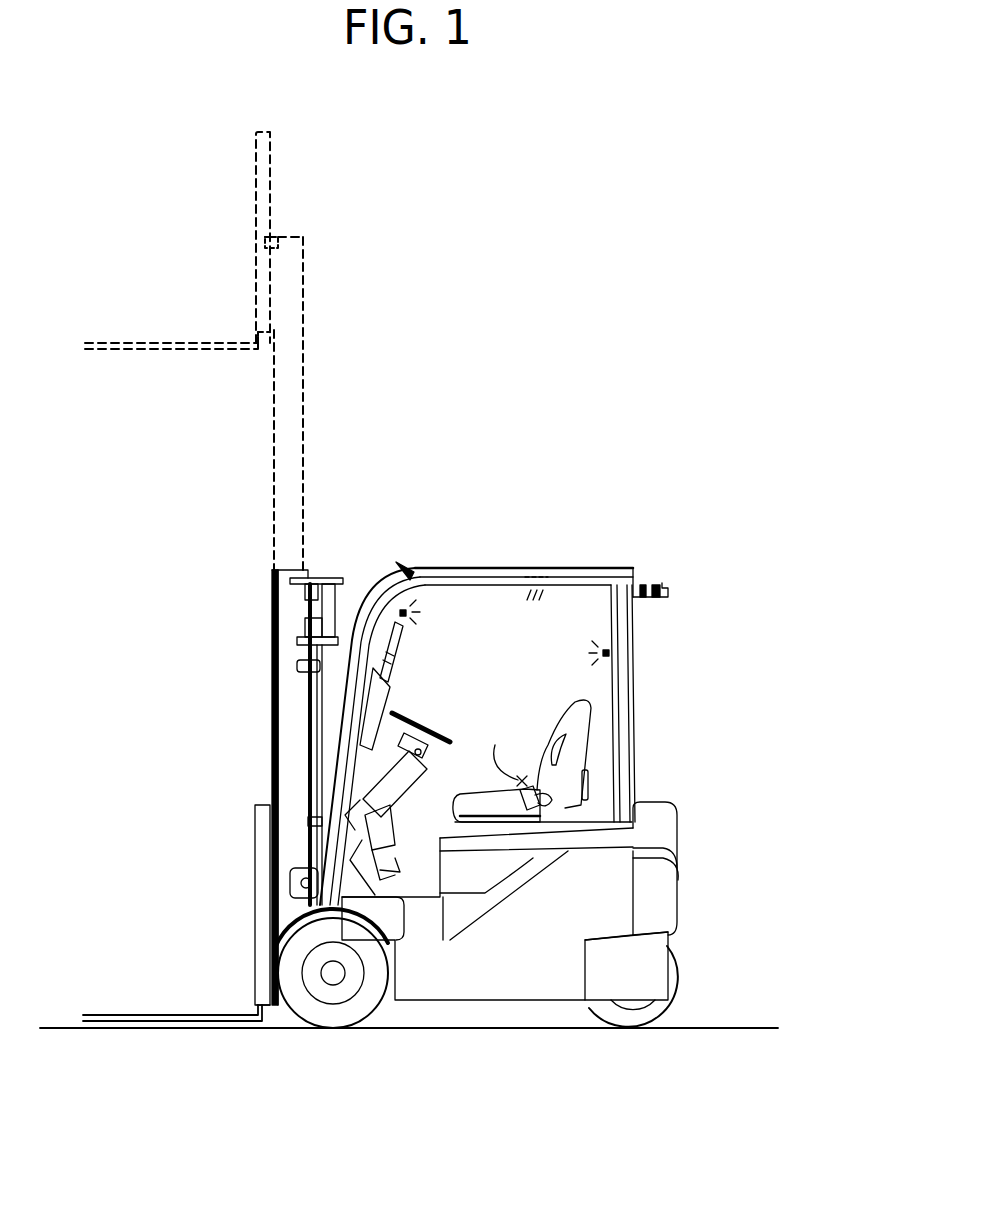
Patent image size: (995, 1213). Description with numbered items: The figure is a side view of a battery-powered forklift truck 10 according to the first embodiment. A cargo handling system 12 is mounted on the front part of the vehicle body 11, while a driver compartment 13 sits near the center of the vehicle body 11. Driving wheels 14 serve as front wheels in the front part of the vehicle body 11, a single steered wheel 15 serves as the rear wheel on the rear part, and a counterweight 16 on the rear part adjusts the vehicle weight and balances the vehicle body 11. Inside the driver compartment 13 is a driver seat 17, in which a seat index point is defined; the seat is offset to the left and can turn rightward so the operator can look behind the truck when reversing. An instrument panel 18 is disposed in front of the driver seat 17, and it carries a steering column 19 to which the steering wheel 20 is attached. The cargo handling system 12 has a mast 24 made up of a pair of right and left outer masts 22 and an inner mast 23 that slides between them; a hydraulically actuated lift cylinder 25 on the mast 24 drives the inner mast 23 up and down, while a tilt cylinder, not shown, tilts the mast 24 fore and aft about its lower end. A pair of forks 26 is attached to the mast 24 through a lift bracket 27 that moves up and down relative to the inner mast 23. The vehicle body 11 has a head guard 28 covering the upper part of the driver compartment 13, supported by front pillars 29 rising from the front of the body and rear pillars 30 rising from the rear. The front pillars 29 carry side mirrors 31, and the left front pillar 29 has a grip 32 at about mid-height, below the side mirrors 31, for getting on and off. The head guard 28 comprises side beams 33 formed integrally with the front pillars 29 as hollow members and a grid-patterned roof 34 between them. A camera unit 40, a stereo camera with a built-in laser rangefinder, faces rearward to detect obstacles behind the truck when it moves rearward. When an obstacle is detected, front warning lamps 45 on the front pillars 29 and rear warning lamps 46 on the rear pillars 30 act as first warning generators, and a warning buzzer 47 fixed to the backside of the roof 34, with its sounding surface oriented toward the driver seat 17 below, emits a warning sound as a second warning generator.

The forklift truck 10 is at (624, 478).
The vehicle body 11 is at (485, 1032).
The cargo handling system 12 is at (202, 696).
The driver compartment 13 is at (496, 702).
The driving wheels 14 is at (372, 1030).
The steered wheel 15 is at (675, 1032).
The counterweight 16 is at (678, 836).
The driver seat 17 is at (588, 738).
The instrument panel 18 is at (390, 790).
The steering column 19 is at (420, 758).
The steering wheel 20 is at (425, 722).
The outer masts 22 is at (287, 755).
The inner mast 23 is at (272, 457).
The mast 24 is at (268, 675).
The lift cylinder 25 is at (320, 705).
The forks 26 is at (165, 343).
The lift bracket 27 is at (257, 221).
The head guard 28 is at (537, 565).
The front pillars 29 is at (330, 775).
The rear pillars 30 is at (633, 705).
The side mirrors 31 is at (400, 655).
The grip 32 is at (392, 690).
The side beams 33 is at (503, 572).
The roof 34 is at (422, 567).
The camera unit 40 is at (670, 597).
The front warning lamps 45 is at (412, 613).
The rear warning lamps 46 is at (598, 655).
The warning buzzer 47 is at (560, 582).